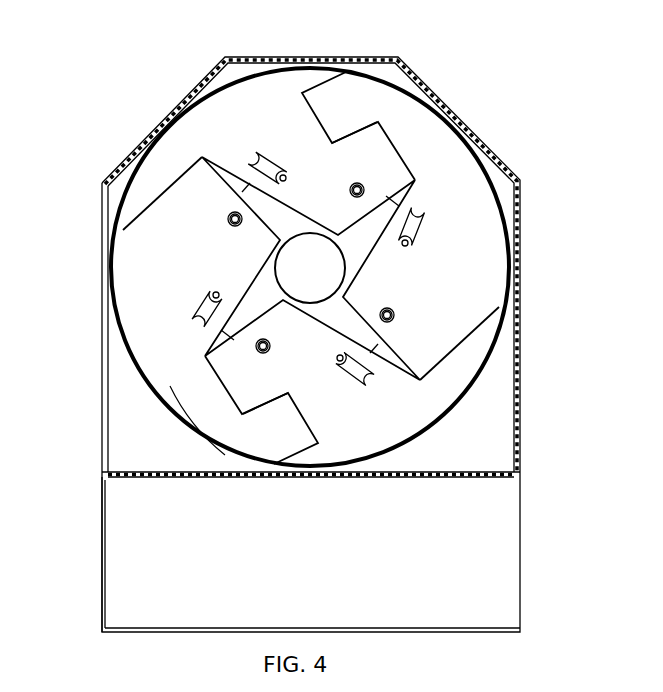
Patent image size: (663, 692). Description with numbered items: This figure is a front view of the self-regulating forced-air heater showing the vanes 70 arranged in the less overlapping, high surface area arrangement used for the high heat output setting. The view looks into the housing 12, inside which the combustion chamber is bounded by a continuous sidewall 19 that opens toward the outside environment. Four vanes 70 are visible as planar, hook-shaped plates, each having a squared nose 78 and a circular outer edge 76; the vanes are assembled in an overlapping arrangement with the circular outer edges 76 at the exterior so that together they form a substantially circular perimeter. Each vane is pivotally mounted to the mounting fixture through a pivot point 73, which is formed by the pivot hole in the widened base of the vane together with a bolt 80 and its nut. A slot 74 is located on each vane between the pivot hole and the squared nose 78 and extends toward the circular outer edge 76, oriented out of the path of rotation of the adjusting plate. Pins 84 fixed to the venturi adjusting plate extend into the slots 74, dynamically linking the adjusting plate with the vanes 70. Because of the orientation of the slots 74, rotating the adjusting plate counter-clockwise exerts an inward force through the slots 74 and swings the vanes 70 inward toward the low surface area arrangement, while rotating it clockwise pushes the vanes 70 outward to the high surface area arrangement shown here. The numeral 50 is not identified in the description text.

The housing 12 is at (363, 60).
The continuous sidewall 19 is at (452, 382).
The rotor 50 is at (403, 130).
The vanes 70 is at (210, 122).
The pivot points 73 is at (353, 195).
The slot 74 is at (253, 154).
The circular outer edge 76 is at (224, 100).
The squared nose 78 is at (335, 105).
The bolts 80 is at (356, 183).
The pins 84 is at (287, 180).